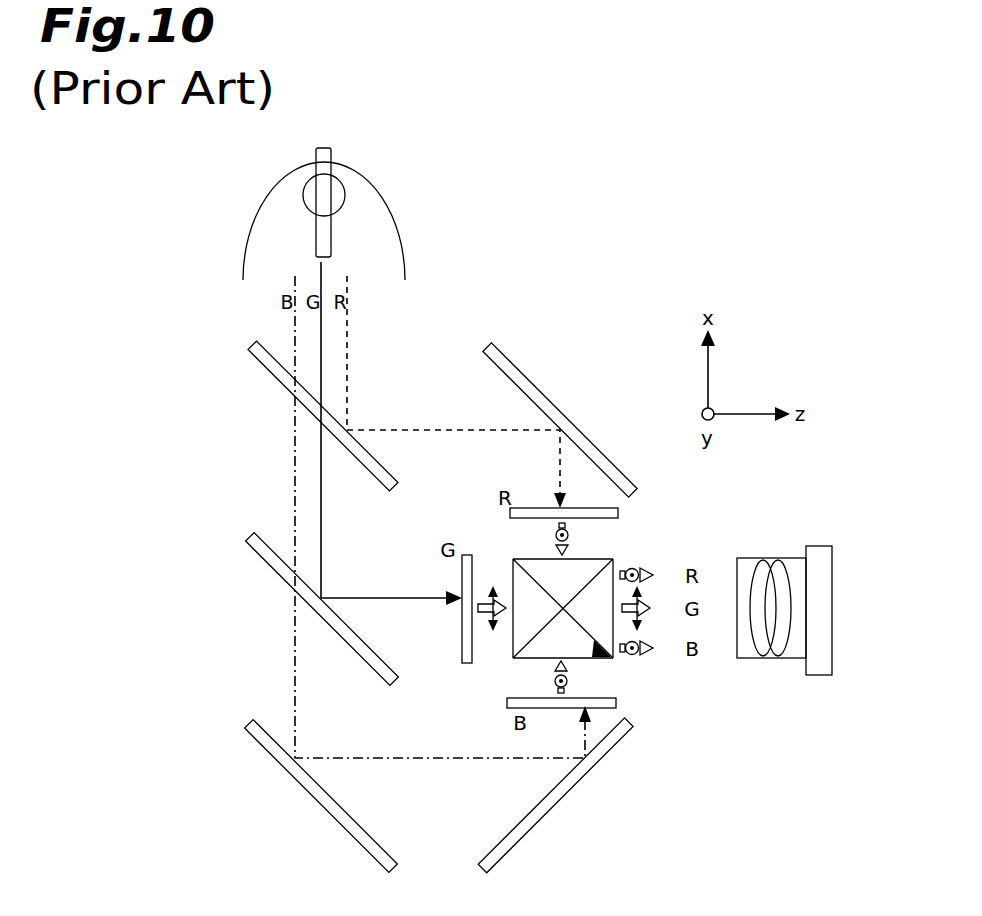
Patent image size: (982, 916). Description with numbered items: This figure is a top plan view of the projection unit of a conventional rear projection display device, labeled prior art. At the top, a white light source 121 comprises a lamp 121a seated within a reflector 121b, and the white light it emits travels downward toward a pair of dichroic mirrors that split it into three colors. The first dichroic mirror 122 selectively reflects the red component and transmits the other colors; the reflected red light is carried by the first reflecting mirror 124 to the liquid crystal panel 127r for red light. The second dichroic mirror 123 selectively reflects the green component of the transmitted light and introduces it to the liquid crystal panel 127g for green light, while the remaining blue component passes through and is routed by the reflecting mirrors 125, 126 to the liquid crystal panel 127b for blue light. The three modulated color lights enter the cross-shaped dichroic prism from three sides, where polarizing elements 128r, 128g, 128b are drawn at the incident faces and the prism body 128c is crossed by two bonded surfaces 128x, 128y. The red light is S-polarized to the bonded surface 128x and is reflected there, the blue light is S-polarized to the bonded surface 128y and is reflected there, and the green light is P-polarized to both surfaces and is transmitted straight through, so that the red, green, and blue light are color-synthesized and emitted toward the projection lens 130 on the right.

The white light source 121 is at (351, 158).
The lamp 121a is at (304, 193).
The reflector 121b is at (382, 192).
The first dichroic mirror 122 is at (284, 378).
The second dichroic mirror 123 is at (285, 567).
The first reflecting mirror 124 is at (520, 380).
The reflecting mirror 125 is at (307, 787).
The reflecting mirror 126 is at (544, 810).
The liquid crystal panel for red light 127r is at (543, 507).
The liquid crystal panel for green light 127g is at (465, 643).
The liquid crystal panel for blue light 127b is at (537, 710).
The red incident polarizer 128r is at (532, 559).
The green incident polarizer 128g is at (512, 590).
The blue incident polarizer 128b is at (530, 660).
The cross dichroic prism 128c is at (615, 576).
The bonded surface 128x is at (603, 660).
The bonded surface 128y is at (553, 618).
The projection lens 130 is at (772, 560).